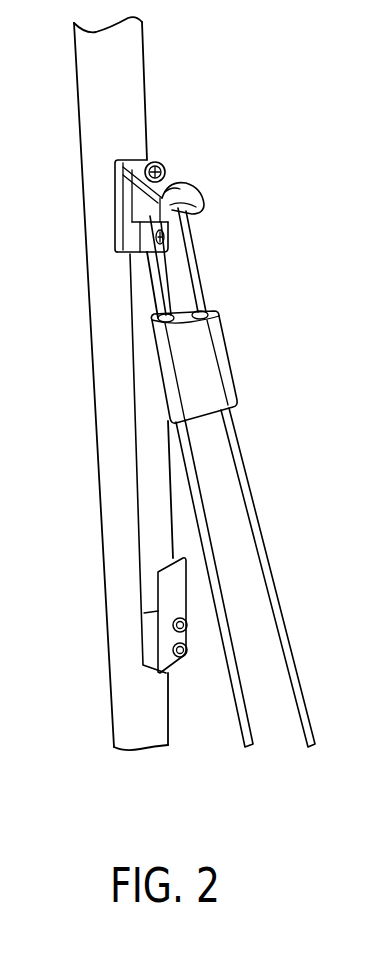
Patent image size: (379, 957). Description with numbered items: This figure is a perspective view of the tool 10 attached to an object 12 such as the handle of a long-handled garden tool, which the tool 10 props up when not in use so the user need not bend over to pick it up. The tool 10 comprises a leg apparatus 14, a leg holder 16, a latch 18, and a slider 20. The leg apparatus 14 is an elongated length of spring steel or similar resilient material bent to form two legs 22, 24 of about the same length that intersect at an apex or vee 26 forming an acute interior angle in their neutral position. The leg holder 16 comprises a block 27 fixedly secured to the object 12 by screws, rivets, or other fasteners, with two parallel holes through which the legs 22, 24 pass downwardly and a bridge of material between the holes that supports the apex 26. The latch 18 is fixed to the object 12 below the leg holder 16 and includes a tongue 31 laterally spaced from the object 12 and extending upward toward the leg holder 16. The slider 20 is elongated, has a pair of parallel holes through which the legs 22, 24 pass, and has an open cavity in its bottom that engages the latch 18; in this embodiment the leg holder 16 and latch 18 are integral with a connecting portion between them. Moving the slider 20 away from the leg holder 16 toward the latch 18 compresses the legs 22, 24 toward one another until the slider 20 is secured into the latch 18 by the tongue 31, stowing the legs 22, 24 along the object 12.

The tool 10 is at (276, 318).
The object 12 is at (132, 78).
The leg apparatus 14 is at (290, 472).
The leg holder 16 is at (128, 168).
The latch 18 is at (176, 612).
The slider 20 is at (218, 375).
The leg 22 is at (300, 680).
The leg 24 is at (237, 700).
The apex 26 is at (167, 182).
The block 27 is at (197, 210).
The tongue 31 is at (172, 584).